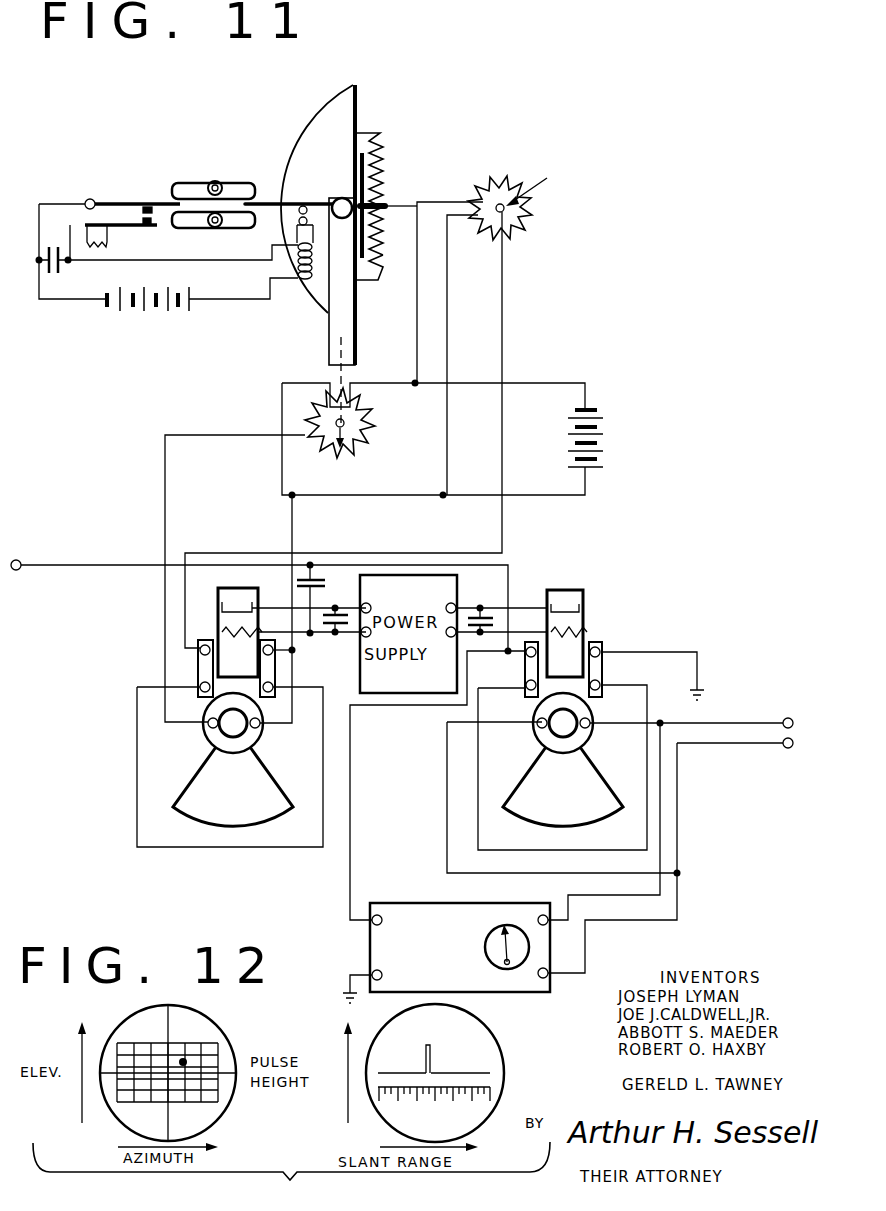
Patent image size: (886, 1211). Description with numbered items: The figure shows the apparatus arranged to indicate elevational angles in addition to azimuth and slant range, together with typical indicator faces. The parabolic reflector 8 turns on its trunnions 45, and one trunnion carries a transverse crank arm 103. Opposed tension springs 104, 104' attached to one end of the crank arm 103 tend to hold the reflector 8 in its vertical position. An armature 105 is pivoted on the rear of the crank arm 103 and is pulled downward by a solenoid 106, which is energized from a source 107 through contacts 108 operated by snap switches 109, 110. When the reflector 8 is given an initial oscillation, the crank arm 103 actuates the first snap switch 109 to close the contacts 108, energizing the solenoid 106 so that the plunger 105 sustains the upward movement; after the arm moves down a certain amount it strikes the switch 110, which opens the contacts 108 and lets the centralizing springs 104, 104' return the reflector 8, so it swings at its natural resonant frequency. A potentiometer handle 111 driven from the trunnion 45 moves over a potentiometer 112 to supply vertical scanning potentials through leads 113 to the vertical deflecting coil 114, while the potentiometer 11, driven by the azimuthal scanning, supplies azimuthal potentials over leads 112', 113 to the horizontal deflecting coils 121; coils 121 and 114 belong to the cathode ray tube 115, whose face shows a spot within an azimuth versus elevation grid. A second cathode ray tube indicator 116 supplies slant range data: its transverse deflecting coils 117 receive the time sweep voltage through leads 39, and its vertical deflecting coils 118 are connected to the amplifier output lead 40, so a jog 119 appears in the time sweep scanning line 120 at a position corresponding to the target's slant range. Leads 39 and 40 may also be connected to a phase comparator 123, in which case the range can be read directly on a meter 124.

In FIG. 11, the parabolic reflector 8 is at (358, 109).
In FIG. 11, the trunnions 45 is at (338, 200).
In FIG. 11, the crank arm 103 is at (262, 197).
In FIG. 11, the tension spring 104 is at (398, 195).
In FIG. 11, the tension spring 104' is at (383, 278).
In FIG. 11, the armature 105 is at (303, 290).
In FIG. 11, the solenoid 106 is at (290, 258).
In FIG. 11, the source 107 is at (157, 313).
In FIG. 11, the contacts 108 is at (149, 198).
In FIG. 11, the snap switch 109 is at (190, 183).
In FIG. 11, the snap switch 110 is at (192, 230).
In FIG. 11, the potentiometer handle 111 is at (543, 185).
In FIG. 11, the potentiometer 112 is at (504, 335).
In FIG. 11, the leads 112' is at (235, 578).
In FIG. 11, the leads 113 is at (505, 328).
In FIG. 11, the potentiometer 11 is at (370, 440).
In FIG. 11, the output lead 40 is at (100, 563).
In FIG. 11, the vertical deflecting coil 114 is at (193, 663).
In FIG. 11, the cathode ray tube 115 is at (195, 780).
In FIG. 11, the horizontal deflecting coils 121 is at (257, 732).
In FIG. 11, the cathode ray tube indicator 116 is at (533, 767).
In FIG. 11, the transverse deflecting coils 117 is at (584, 733).
In FIG. 11, the vertical deflecting coils 118 is at (523, 670).
In FIG. 11, the leads 39 is at (720, 727).
In FIG. 11, the phase comparator 123 is at (450, 908).
In FIG. 11, the meter 124 is at (499, 933).
In FIG. 12, the jog 119 is at (430, 1043).
In FIG. 12, the time sweep scanning line 120 is at (475, 1070).